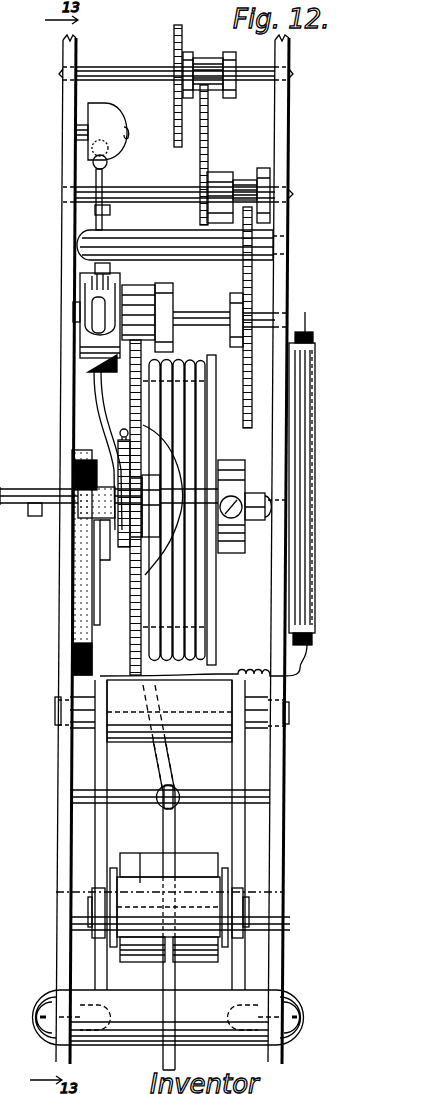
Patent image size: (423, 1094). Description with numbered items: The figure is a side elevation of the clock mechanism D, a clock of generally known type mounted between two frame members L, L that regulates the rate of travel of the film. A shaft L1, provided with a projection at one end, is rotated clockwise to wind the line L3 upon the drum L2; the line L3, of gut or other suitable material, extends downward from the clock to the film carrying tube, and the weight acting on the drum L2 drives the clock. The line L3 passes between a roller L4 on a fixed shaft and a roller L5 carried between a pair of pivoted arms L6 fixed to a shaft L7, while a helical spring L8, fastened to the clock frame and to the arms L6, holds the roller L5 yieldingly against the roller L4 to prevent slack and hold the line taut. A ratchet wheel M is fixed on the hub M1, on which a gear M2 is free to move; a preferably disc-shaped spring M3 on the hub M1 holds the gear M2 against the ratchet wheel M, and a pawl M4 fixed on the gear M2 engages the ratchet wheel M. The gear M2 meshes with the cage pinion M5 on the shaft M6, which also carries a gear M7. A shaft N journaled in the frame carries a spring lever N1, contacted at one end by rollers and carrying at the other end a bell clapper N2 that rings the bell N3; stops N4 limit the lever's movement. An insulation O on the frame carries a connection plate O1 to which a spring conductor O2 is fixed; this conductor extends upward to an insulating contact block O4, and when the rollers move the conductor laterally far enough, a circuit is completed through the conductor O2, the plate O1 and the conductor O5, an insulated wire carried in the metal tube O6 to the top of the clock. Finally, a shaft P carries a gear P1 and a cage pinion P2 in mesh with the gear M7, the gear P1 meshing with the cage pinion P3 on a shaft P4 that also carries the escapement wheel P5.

The frame member L is at (62, 102).
The shaft P4 is at (102, 70).
The escapement wheel P5 is at (174, 40).
The cage pinion P3 is at (206, 60).
The gear P1 is at (209, 148).
The shaft P is at (182, 187).
The cage pinion P2 is at (248, 180).
The clock mechanism D is at (295, 160).
The bell N3 is at (110, 120).
The bell clapper N2 is at (108, 163).
The spring lever N1 is at (103, 178).
The stops N4 is at (98, 275).
The shaft N is at (266, 250).
The cage pinion M5 is at (142, 287).
The shaft M6 is at (262, 317).
The gear M7 is at (253, 280).
The ratchet wheel M is at (118, 467).
The hub M1 is at (85, 343).
The contact block O4 is at (82, 362).
The spring conductor O2 is at (93, 394).
The gear M2 is at (130, 412).
The pawl M4 is at (125, 445).
The insulation O is at (78, 620).
The connection plate O1 is at (97, 570).
The shaft L1 is at (35, 490).
The drum L2 is at (214, 442).
The line L3 is at (180, 614).
The spring M3 is at (140, 543).
The conductor O5 is at (306, 326).
The metal tube O6 is at (315, 505).
The shaft L7 is at (260, 714).
The pivoted arms L6 is at (100, 760).
The helical spring L8 is at (172, 787).
The roller L4 is at (210, 864).
The roller L5 is at (140, 853).